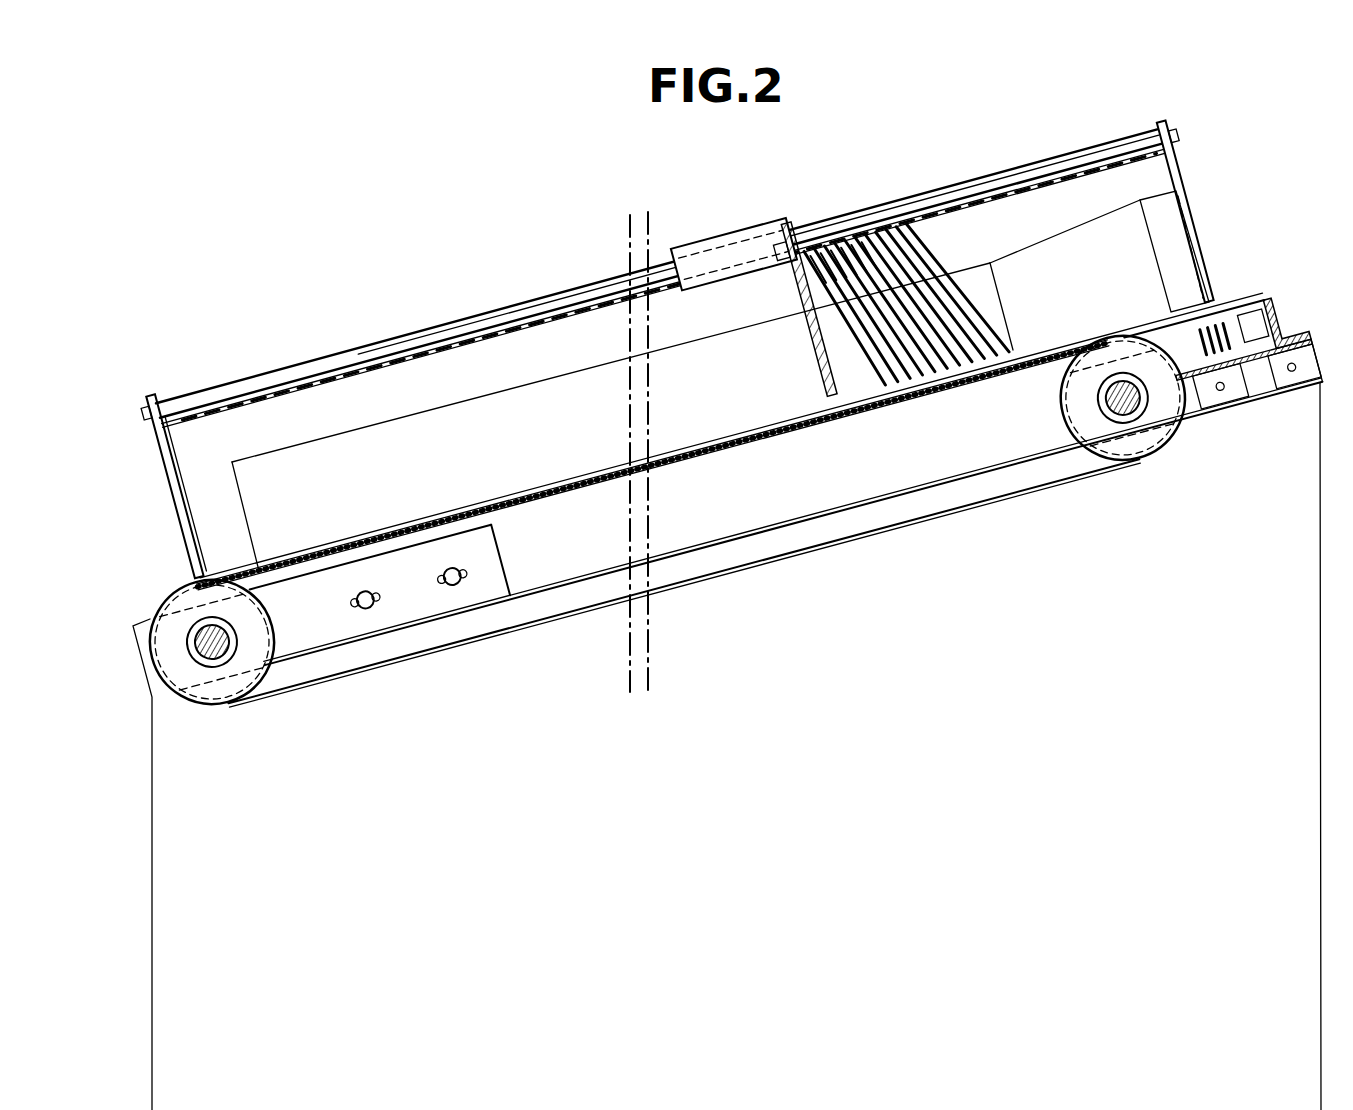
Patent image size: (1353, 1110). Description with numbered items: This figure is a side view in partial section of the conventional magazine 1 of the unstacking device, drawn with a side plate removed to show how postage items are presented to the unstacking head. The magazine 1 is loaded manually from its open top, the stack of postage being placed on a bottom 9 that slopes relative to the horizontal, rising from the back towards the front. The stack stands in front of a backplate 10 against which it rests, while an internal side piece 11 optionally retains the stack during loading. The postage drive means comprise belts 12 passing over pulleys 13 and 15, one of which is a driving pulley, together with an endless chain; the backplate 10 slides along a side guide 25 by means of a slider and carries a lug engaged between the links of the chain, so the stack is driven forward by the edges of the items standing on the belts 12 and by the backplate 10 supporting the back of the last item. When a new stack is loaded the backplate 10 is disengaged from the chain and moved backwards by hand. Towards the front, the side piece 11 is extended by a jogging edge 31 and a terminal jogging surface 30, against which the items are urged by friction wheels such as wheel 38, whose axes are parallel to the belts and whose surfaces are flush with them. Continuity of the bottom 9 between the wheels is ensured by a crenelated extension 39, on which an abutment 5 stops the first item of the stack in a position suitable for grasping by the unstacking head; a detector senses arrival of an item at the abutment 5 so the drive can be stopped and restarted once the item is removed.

The magazine 1 is at (352, 328).
The abutment 5 is at (1275, 297).
The bottom 9 is at (523, 505).
The backplate 10 is at (822, 345).
The internal side piece 11 is at (338, 512).
The belts 12 is at (408, 515).
The pulley 13 is at (213, 684).
The pulley 15 is at (1155, 425).
The side guide 25 is at (948, 190).
The terminal jogging surface 30 is at (1167, 232).
The jogging edge 31 is at (1103, 257).
The wheel 38 is at (1243, 368).
The crenelated extension 39 is at (1272, 360).